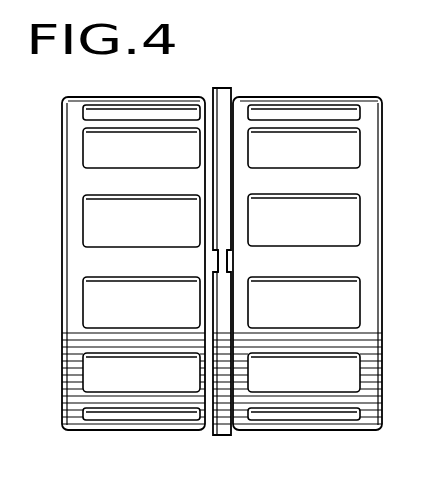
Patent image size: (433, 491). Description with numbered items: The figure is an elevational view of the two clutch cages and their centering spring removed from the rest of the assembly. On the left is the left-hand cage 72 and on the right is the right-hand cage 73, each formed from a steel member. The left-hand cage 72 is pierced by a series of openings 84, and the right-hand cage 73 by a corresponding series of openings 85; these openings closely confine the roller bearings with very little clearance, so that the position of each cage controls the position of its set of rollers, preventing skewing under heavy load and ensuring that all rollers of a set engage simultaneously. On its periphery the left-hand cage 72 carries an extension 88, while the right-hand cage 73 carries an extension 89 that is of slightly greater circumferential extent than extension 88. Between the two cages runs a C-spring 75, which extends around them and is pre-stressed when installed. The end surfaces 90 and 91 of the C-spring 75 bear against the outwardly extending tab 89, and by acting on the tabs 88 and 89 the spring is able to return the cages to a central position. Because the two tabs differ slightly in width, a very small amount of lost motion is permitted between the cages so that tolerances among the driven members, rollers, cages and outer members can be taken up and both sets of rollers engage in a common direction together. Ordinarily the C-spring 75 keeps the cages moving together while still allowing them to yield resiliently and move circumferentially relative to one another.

The left-hand cage 72 is at (72, 177).
The right-hand cage 73 is at (372, 177).
The C-spring 75 is at (225, 92).
The openings 84 is at (147, 226).
The openings 85 is at (318, 229).
The extension 88 is at (218, 261).
The extension 89 is at (230, 261).
The end surface 90 is at (222, 247).
The end surface 91 is at (222, 277).